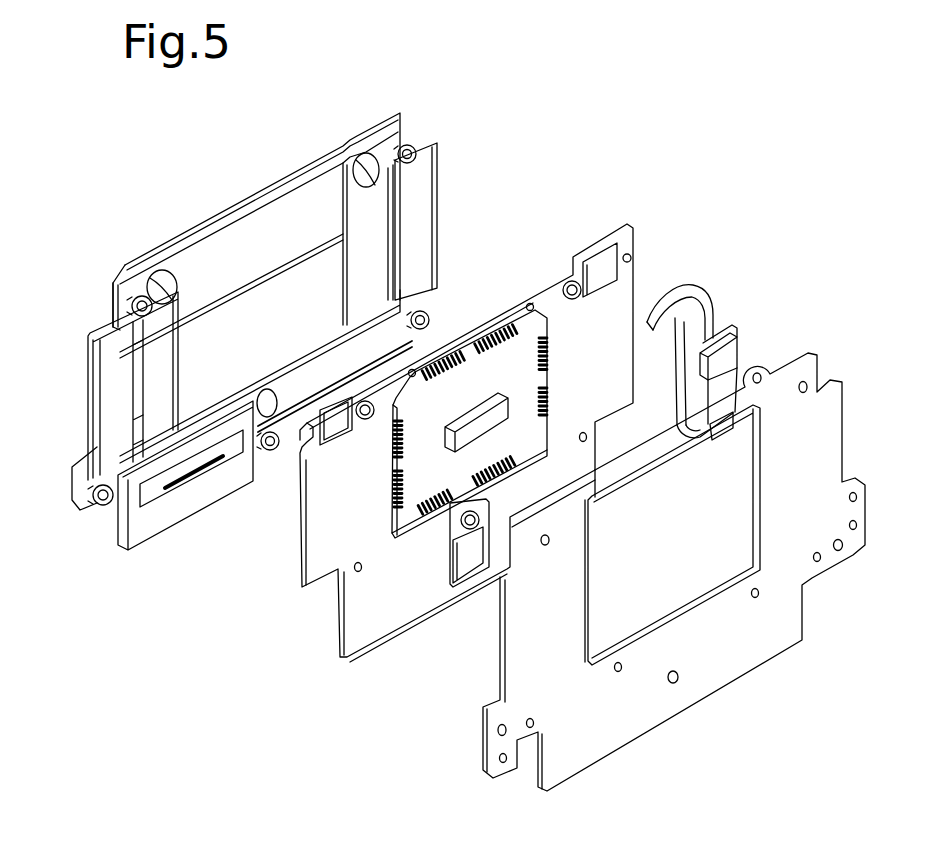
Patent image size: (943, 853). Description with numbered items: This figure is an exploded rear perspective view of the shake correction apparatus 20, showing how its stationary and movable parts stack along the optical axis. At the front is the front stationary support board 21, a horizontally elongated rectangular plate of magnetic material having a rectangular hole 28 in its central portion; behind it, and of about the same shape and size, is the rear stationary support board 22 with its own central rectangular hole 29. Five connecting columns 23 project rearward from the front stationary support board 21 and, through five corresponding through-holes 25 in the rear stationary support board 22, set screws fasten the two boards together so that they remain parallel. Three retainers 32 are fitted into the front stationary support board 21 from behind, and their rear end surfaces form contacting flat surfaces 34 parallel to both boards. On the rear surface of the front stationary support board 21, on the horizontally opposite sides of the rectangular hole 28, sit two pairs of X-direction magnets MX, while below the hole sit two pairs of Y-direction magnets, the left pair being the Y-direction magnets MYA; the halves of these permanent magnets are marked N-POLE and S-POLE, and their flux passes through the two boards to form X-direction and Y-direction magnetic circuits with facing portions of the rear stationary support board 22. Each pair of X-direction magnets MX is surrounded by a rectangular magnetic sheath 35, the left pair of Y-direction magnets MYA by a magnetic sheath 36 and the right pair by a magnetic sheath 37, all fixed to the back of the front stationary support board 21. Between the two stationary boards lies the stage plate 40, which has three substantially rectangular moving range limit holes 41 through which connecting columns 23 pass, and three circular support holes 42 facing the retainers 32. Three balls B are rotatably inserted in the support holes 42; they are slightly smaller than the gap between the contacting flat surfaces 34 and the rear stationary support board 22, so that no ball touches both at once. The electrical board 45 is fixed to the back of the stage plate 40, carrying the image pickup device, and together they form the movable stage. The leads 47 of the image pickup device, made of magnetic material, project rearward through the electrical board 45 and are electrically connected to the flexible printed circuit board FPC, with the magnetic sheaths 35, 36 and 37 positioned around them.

The shake correction apparatus 20 is at (584, 155).
The front stationary support board 21 is at (180, 248).
The rear stationary support board 22 is at (802, 370).
The connecting columns 23 is at (130, 298).
The through-holes 25 is at (801, 392).
The rectangular hole 28 is at (270, 207).
The rectangular hole 29 is at (755, 513).
The retainers 32 is at (308, 241).
The contacting flat surfaces 34 is at (168, 280).
The magnetic sheath 35 is at (92, 390).
The magnetic sheath 36 is at (173, 535).
The magnetic sheath 37 is at (388, 346).
The stage plate 40 is at (633, 233).
The moving range limit holes 41 is at (605, 248).
The support holes 42 is at (568, 284).
The electrical board 45 is at (540, 378).
The leads 47 is at (552, 353).
The flexible printed circuit board FPC is at (693, 288).
The X-direction magnets MX is at (113, 420).
The Y-direction magnets MYA is at (152, 541).
The balls B is at (567, 278).
The N-pole N-POLE is at (335, 363).
The S-pole S-POLE is at (370, 228).